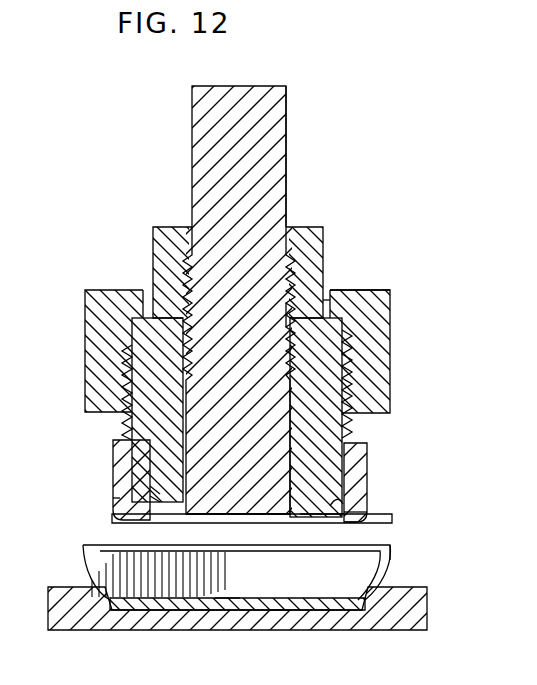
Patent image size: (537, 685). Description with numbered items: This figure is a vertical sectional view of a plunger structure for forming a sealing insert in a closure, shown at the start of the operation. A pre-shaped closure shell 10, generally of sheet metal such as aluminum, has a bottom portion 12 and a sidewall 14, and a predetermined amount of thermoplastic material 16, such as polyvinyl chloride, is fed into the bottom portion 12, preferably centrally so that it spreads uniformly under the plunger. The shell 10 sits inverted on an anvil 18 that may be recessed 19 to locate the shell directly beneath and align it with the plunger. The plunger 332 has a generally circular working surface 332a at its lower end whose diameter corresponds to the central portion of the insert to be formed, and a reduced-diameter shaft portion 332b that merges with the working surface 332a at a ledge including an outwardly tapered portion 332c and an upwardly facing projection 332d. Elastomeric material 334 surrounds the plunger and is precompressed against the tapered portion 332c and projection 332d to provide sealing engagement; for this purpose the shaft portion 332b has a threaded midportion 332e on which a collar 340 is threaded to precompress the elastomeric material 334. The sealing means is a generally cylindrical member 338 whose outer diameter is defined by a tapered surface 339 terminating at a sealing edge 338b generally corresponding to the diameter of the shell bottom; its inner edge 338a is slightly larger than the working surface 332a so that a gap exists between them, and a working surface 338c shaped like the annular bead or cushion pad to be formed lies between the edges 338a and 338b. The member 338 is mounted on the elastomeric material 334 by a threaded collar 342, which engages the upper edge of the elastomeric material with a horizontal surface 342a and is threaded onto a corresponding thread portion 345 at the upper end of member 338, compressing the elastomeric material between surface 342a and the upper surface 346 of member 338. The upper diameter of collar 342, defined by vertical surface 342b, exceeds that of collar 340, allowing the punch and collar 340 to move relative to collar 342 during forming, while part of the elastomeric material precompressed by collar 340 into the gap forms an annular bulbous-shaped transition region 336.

The pre-shaped closure shell 10 is at (408, 561).
The bottom portion 12 is at (327, 611).
The sidewall 14 is at (380, 570).
The thermoplastic material 16 is at (228, 603).
The anvil 18 is at (409, 618).
The recess 19 is at (268, 612).
The plunger 332 is at (270, 162).
The working surface 332a is at (228, 527).
The shaft portion 332b is at (287, 136).
The outwardly tapered portion 332c is at (155, 490).
The upwardly facing projection 332d is at (148, 494).
The threaded midportion 332e is at (283, 313).
The elastomeric material 334 is at (340, 432).
The annular bulbous-shaped transition region 336 is at (137, 528).
The generally cylindrical member 338 is at (362, 477).
The inner edge 338a is at (326, 523).
The sealing edge 338b is at (340, 513).
The working surface 338c is at (340, 532).
The tapered surface 339 is at (115, 497).
The collar 340 is at (310, 253).
The threaded collar 342 is at (385, 330).
The horizontal surface 342a is at (362, 292).
The vertical surface 342b is at (326, 292).
The thread portion 345 is at (360, 417).
The upper surface 346 is at (343, 497).